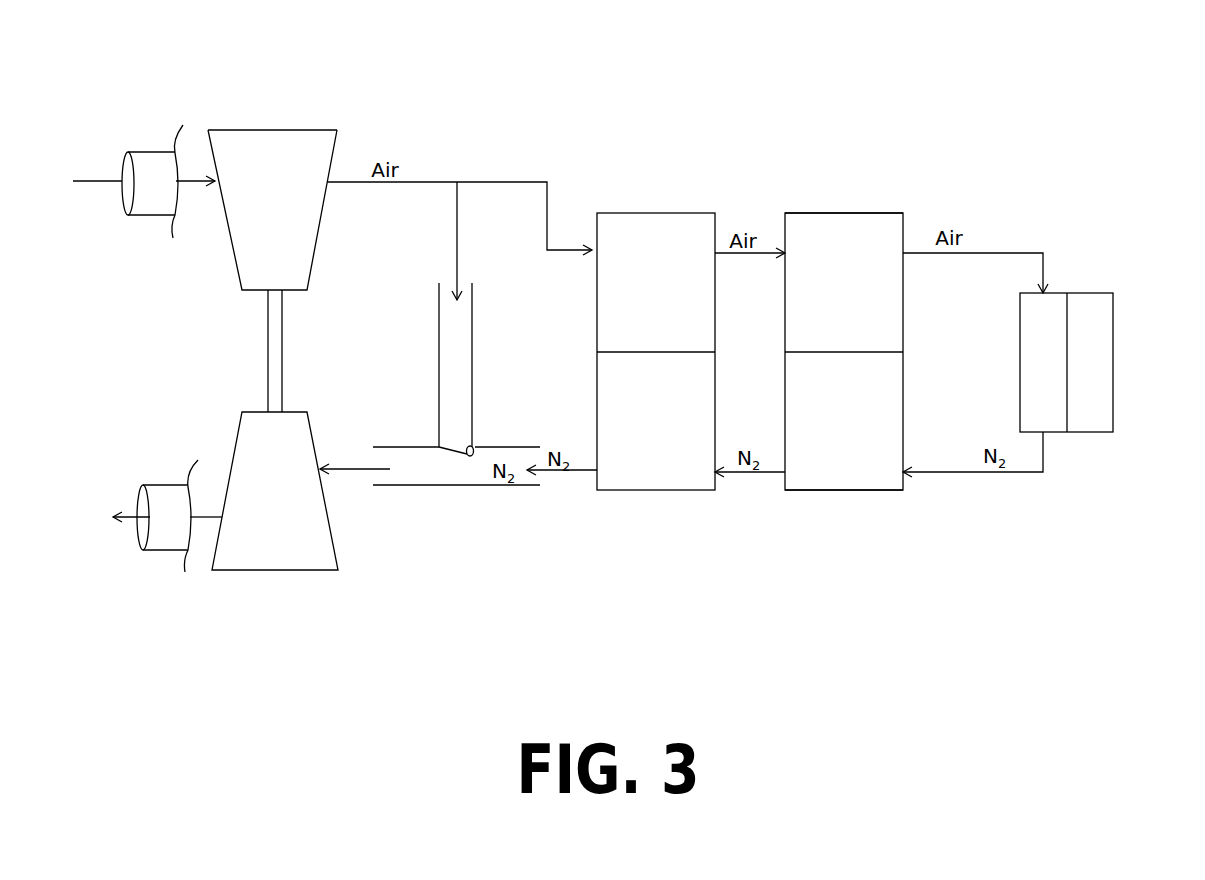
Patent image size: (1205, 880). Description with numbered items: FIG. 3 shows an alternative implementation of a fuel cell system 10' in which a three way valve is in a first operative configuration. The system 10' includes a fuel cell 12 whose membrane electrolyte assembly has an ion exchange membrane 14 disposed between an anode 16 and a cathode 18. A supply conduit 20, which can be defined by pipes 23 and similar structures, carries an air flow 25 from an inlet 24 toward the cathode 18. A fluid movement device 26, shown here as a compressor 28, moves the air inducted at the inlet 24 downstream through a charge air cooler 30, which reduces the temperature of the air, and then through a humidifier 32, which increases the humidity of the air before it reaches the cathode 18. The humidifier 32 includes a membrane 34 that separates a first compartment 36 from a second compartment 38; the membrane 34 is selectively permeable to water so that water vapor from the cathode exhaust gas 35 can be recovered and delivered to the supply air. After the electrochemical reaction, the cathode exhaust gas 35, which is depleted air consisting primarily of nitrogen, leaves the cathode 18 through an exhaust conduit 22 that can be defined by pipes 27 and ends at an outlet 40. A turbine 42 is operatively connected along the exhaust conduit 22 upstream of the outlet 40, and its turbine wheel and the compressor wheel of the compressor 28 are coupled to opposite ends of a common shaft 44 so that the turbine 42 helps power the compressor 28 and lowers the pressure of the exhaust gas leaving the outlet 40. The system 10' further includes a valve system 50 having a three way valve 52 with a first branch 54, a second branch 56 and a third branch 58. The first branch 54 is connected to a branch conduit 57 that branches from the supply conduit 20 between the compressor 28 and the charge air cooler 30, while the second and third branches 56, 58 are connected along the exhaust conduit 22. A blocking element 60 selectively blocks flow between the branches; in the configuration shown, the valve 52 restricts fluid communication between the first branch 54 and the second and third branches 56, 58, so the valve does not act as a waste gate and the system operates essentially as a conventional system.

The fuel cell system 10' is at (985, 86).
The fuel cell 12 is at (1104, 480).
The ion exchange membrane 14 is at (1068, 335).
The anode 16 is at (1113, 348).
The cathode 18 is at (1025, 368).
The supply conduit 20 is at (525, 150).
The exhaust conduit 22 is at (750, 510).
The pipes 23 is at (147, 150).
The inlet 24 is at (127, 200).
The air flow 25 is at (90, 178).
The fluid movement device 26 is at (258, 100).
The pipes 27 is at (150, 483).
The compressor 28 is at (307, 130).
The charge air cooler 30 is at (628, 180).
The humidifier 32 is at (839, 170).
The membrane 34 is at (825, 352).
The cathode exhaust gas 35 is at (973, 473).
The first compartment 36 is at (872, 235).
The second compartment 38 is at (878, 480).
The outlet 40 is at (140, 537).
The turbine 42 is at (298, 573).
The common shaft 44 is at (282, 332).
The valve system 50 is at (441, 550).
The three way valve 52 is at (467, 488).
The first branch 54 is at (473, 313).
The second branch 56 is at (403, 445).
The branch conduit 57 is at (428, 262).
The third branch 58 is at (500, 447).
The blocking element 60 is at (437, 470).